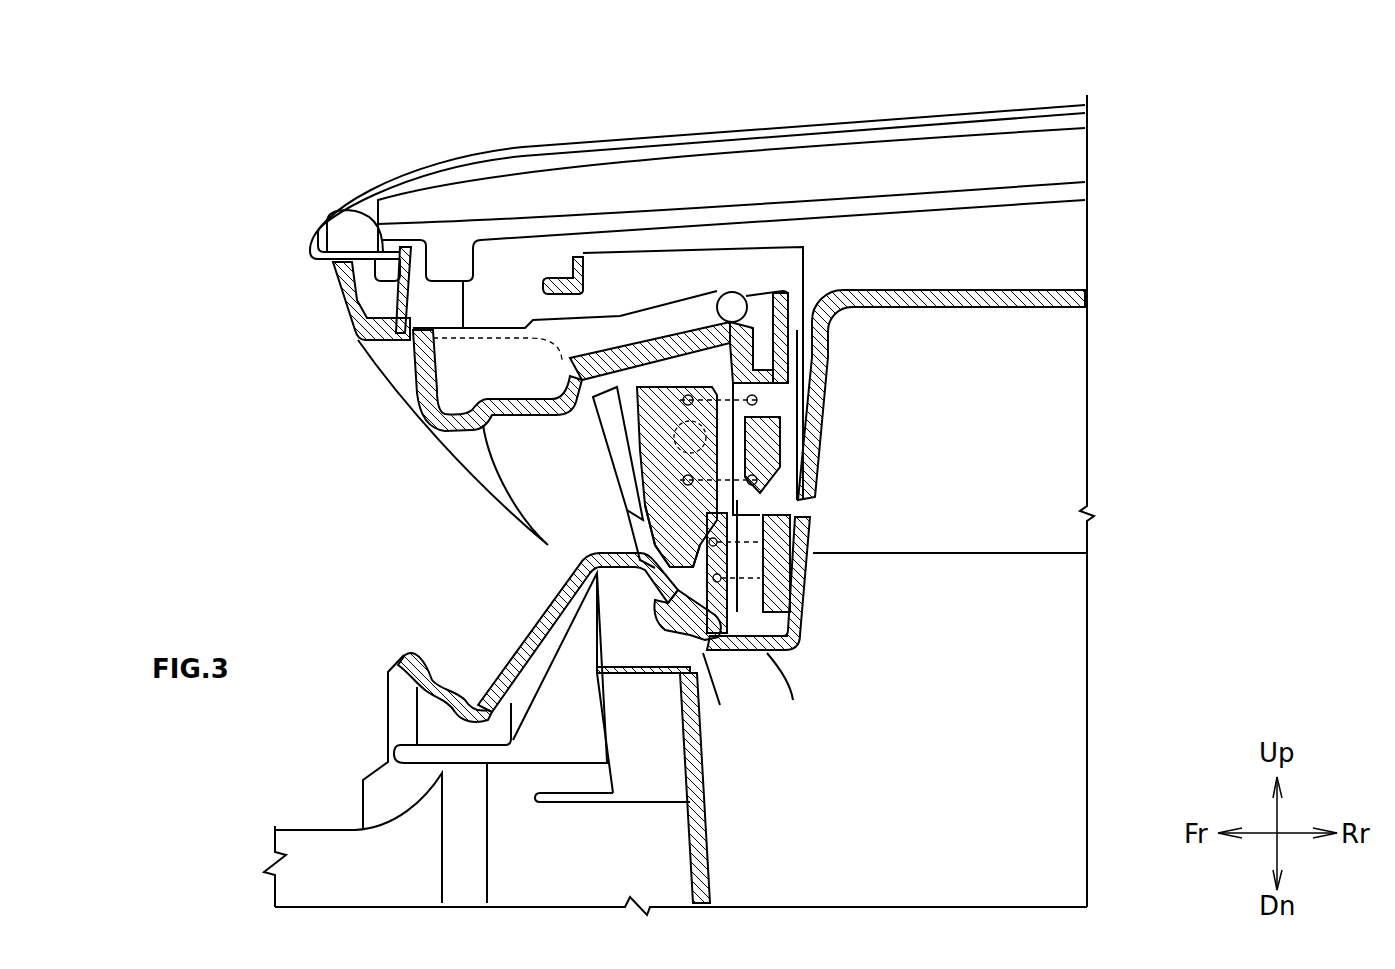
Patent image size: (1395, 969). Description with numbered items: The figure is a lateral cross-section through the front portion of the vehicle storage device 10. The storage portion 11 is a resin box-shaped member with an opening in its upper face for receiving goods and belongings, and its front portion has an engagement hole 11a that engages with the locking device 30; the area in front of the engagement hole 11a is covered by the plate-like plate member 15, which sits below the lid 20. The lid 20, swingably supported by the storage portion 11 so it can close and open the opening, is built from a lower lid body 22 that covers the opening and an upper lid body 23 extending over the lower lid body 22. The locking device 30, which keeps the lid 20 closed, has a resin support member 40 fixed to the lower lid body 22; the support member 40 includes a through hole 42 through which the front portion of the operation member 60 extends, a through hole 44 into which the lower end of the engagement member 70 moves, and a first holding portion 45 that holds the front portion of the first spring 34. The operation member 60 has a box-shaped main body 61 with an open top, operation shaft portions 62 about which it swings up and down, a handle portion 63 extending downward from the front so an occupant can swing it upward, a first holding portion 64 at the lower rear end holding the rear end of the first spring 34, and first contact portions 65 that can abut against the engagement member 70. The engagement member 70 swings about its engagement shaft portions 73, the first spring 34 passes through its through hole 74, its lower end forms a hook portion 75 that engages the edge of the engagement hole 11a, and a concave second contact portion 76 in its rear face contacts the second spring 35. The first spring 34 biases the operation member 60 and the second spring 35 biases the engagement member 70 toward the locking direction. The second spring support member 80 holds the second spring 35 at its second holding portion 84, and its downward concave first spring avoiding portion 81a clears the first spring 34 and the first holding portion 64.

The storage device 10 is at (140, 117).
The storage portion 11 is at (1015, 722).
The engagement hole 11a is at (657, 652).
The plate member 15 is at (523, 650).
The lid 20 is at (780, 273).
The lower lid body 22 is at (990, 369).
The upper lid body 23 is at (1048, 103).
The locking device 30 is at (338, 434).
The first spring 34 is at (818, 487).
The second spring 35 is at (792, 648).
The support member 40 is at (562, 260).
The through hole for the operation member 42 is at (560, 313).
The through hole for the engagement member 44 is at (712, 647).
The first holding portion of the support member 45 is at (612, 395).
The operation member 60 is at (408, 366).
The main body of the operation member 61 is at (663, 300).
The operation shaft portions 62 is at (742, 320).
The handle portion 63 is at (480, 440).
The first holding portion of the operation member 64 is at (740, 428).
The first contact portions 65 is at (760, 345).
The engagement member 70 is at (757, 622).
The engagement shaft portions 73 is at (690, 435).
The through hole 74 is at (680, 482).
The hook portion 75 is at (648, 600).
The second contact portion of the engagement member 76 is at (652, 516).
The second spring support member 80 is at (805, 505).
The first spring avoiding portion 81a is at (783, 470).
The second holding portion of the second spring support member 84 is at (790, 560).